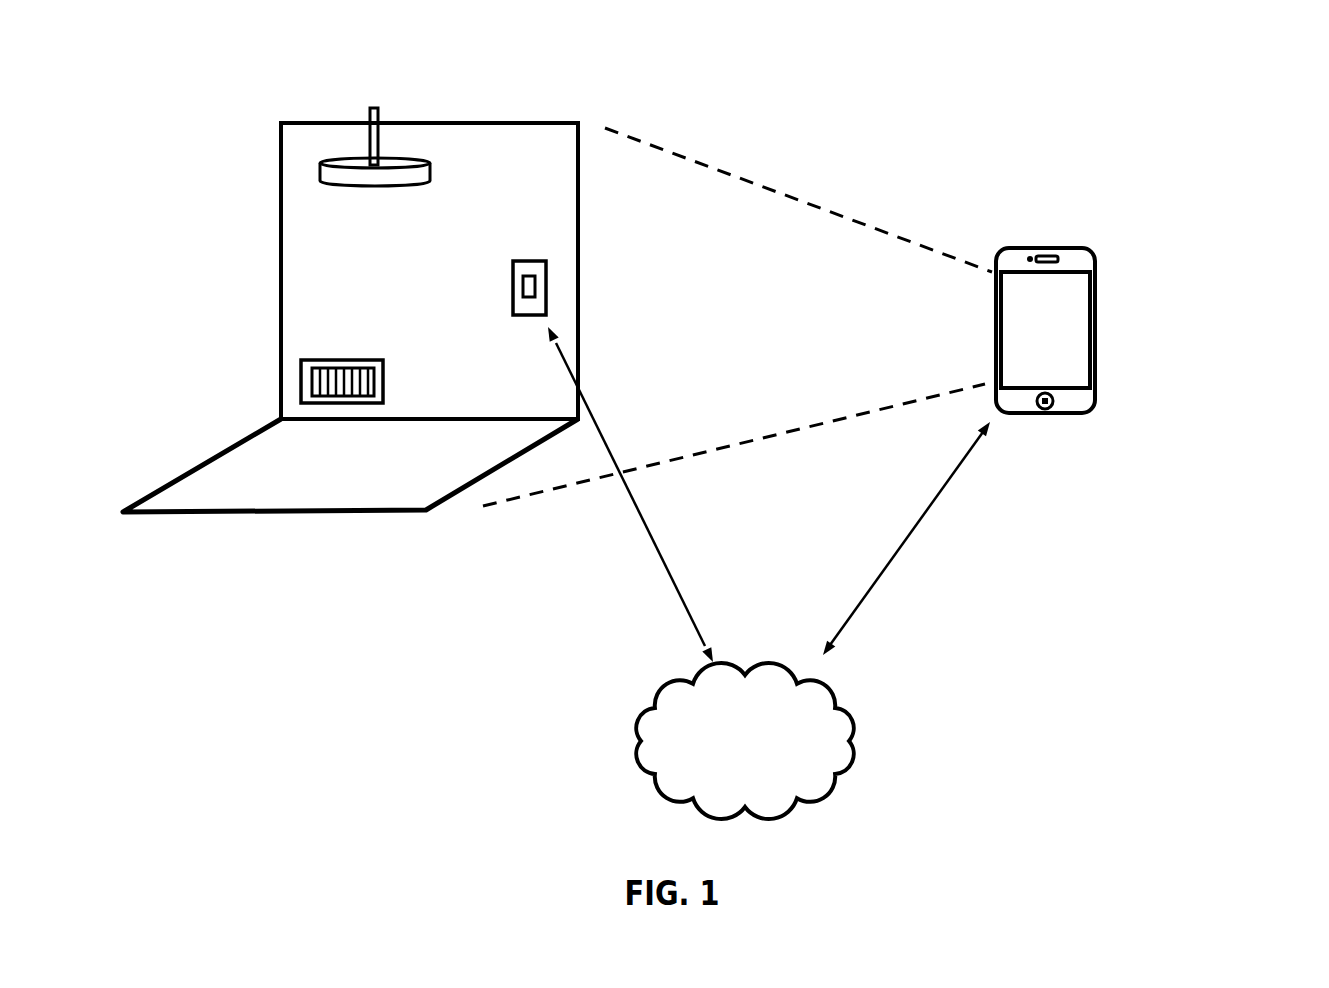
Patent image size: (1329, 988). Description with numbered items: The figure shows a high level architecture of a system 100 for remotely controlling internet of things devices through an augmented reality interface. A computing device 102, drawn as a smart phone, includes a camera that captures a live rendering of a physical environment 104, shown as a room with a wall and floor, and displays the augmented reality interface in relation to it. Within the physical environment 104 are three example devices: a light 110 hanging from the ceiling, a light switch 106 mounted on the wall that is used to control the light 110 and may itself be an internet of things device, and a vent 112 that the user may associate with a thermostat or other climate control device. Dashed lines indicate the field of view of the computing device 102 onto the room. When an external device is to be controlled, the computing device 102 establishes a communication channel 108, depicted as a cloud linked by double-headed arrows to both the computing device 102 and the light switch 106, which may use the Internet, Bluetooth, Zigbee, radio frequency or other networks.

The system 100 is at (1314, 47).
The computing device 102 is at (1093, 292).
The physical environment 104 is at (278, 535).
The light switch 106 is at (562, 277).
The communication channel 108 is at (848, 692).
The light 110 is at (341, 207).
The vent 112 is at (294, 368).